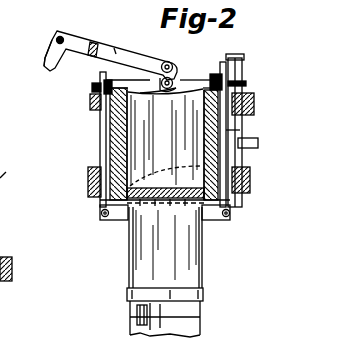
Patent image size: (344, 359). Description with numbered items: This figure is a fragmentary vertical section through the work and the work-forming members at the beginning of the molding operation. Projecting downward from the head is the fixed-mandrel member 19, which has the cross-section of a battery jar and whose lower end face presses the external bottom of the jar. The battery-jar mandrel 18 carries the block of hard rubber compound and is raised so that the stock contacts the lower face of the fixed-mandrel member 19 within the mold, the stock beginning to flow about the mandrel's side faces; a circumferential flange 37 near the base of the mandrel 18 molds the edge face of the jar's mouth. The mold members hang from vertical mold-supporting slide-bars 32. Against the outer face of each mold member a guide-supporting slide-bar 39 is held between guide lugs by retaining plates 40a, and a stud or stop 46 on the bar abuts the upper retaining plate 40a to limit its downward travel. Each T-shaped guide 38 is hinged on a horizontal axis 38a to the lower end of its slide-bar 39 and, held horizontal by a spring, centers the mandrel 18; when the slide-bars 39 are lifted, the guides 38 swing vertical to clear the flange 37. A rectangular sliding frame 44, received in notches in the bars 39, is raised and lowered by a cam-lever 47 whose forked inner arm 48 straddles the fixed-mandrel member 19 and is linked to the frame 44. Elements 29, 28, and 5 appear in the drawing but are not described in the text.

The inner arm 48 is at (108, 52).
The cam-lever 47 is at (44, 62).
The stud or stop 46 is at (91, 88).
The retaining plate 40a is at (91, 102).
The fixed-mandrel member 19 is at (148, 132).
The guide-supporting slide-bar 39 is at (100, 150).
The arm 29 is at (12, 164).
The bracket 28 is at (0, 218).
The T-shaped guide 38 is at (118, 214).
The horizontal axis 38a is at (102, 216).
The sliding frame 44 is at (212, 80).
The mold-supporting slide-bar 32 is at (239, 56).
The battery-jar mandrel 18 is at (172, 262).
The circumferential flange 37 is at (204, 296).
The frame 5 is at (6, 350).